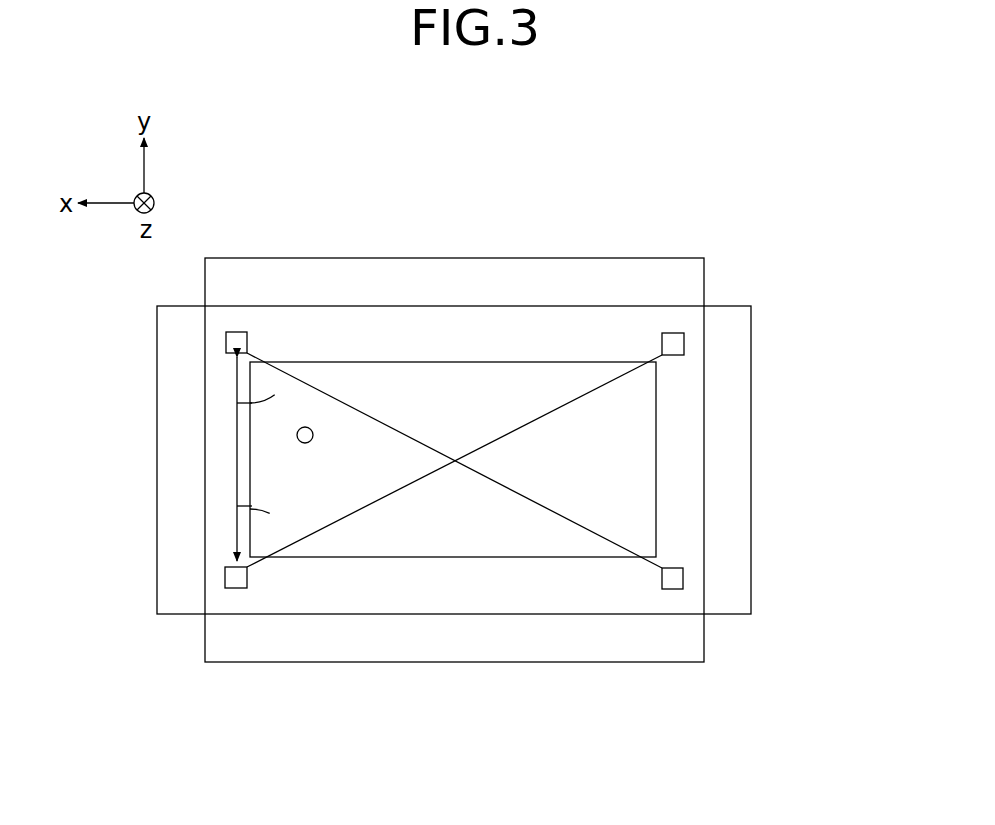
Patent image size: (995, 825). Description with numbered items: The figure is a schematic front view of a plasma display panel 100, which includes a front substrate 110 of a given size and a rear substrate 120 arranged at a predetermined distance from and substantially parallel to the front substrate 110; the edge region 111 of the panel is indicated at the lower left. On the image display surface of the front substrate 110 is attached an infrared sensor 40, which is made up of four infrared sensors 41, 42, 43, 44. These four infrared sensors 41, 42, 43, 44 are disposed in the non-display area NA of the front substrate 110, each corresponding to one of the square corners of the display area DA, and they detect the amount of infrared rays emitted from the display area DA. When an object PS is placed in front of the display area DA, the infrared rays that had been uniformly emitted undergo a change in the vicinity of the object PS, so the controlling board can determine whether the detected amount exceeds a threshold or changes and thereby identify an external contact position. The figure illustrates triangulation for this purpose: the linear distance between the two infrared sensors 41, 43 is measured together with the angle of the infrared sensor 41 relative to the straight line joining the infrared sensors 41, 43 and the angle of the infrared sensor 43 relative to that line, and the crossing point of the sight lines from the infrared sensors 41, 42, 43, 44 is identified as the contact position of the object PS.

The display device 100 is at (748, 242).
The front substrate 110 is at (751, 530).
The edge of display panel 111 is at (203, 662).
The rear substrate 120 is at (702, 638).
The infrared sensor 40 is at (242, 200).
The infrared sensor 41 is at (236, 332).
The infrared sensor 42 is at (670, 333).
The infrared sensor 43 is at (236, 588).
The infrared sensor 44 is at (670, 589).
The display area DA is at (656, 438).
The non-display area NA is at (176, 543).
The object PS is at (304, 427).